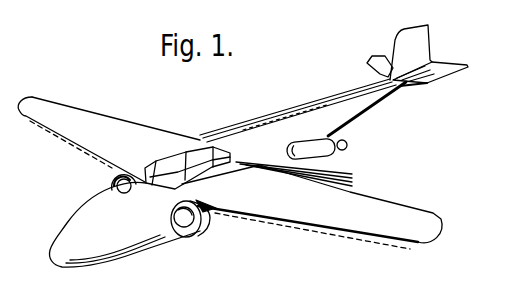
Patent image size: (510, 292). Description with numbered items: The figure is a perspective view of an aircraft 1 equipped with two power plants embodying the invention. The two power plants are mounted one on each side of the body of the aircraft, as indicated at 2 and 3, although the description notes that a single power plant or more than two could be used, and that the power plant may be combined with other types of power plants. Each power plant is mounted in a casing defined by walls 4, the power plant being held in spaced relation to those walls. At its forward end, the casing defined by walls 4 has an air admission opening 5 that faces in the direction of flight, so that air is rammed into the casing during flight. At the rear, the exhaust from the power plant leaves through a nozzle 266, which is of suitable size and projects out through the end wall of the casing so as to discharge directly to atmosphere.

The aircraft 1 is at (312, 100).
The power plant 2 is at (110, 183).
The power plant 3 is at (198, 233).
The casing walls 4 is at (121, 179).
The air admission opening 5 is at (107, 193).
The nozzle 266 is at (348, 144).